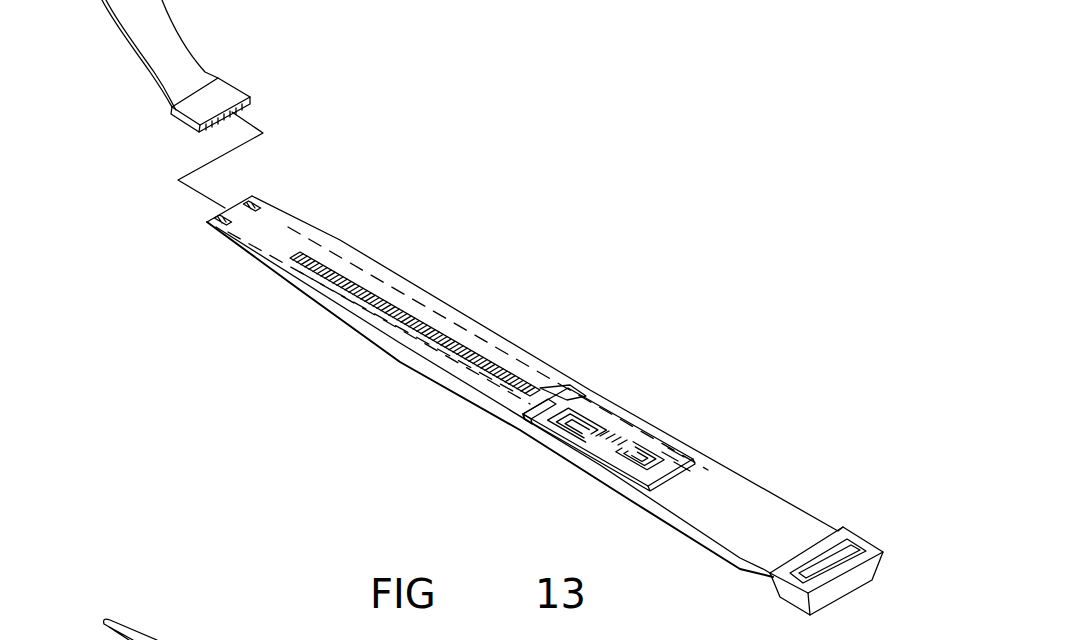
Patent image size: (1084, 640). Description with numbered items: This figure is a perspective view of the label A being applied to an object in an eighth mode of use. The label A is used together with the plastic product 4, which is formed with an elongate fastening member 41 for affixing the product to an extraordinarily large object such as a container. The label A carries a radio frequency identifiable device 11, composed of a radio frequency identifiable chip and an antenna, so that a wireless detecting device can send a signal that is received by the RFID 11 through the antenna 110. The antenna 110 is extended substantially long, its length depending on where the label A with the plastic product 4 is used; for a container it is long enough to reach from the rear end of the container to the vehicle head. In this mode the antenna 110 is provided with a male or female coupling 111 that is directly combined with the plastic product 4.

The plastic product 4 is at (443, 310).
The radio frequency identifiable device (RFID) 11 is at (557, 433).
The elongate fastening member 41 is at (858, 537).
The antenna 110 is at (155, 73).
The male or female coupling 111 is at (230, 92).
The label A is at (640, 422).